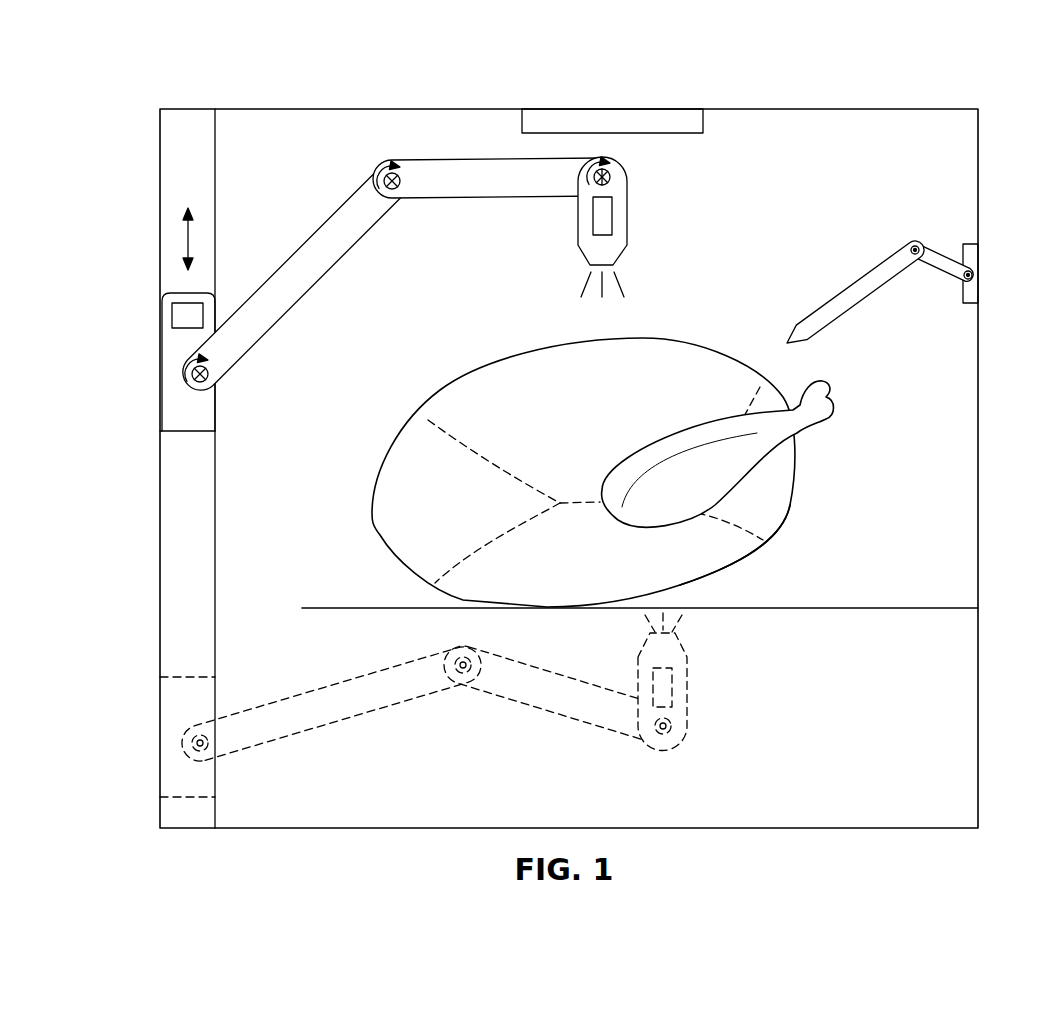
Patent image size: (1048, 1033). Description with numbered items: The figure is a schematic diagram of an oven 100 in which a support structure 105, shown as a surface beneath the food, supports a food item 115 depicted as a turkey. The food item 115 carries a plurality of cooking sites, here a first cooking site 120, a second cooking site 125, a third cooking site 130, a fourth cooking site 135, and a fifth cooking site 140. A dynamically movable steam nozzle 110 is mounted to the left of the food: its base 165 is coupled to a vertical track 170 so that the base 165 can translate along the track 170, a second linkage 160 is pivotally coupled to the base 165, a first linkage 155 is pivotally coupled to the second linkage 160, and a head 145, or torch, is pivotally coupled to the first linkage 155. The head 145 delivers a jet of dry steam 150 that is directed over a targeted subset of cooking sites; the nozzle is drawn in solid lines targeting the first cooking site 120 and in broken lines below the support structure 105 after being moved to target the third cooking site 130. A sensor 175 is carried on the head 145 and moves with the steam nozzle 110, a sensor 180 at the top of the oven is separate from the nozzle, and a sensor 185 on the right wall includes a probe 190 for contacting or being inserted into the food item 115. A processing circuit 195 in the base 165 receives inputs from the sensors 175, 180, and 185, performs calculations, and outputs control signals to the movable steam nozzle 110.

The oven 100 is at (185, 95).
The support structure 105 is at (883, 610).
The movable steam nozzle 110 is at (430, 471).
The food item 115 is at (628, 457).
The first cooking site 120 is at (712, 370).
The second cooking site 125 is at (785, 495).
The third cooking site 130 is at (755, 547).
The fourth cooking site 135 is at (393, 525).
The fifth cooking site 140 is at (642, 462).
The head 145 is at (603, 211).
The jet of dry steam 150 is at (641, 275).
The first linkage 155 is at (473, 205).
The second linkage 160 is at (328, 272).
The base 165 is at (154, 363).
The track 170 is at (205, 532).
The sensor 175 is at (598, 215).
The sensor 180 is at (632, 123).
The sensor 185 is at (882, 255).
The probe 190 is at (845, 290).
The processing circuit 195 is at (177, 313).